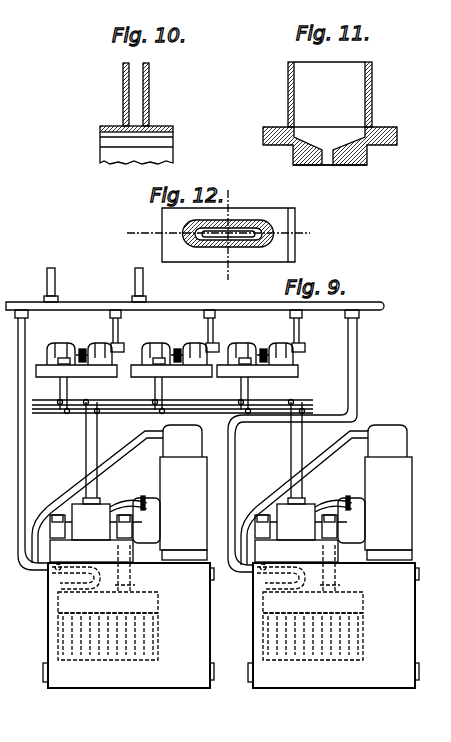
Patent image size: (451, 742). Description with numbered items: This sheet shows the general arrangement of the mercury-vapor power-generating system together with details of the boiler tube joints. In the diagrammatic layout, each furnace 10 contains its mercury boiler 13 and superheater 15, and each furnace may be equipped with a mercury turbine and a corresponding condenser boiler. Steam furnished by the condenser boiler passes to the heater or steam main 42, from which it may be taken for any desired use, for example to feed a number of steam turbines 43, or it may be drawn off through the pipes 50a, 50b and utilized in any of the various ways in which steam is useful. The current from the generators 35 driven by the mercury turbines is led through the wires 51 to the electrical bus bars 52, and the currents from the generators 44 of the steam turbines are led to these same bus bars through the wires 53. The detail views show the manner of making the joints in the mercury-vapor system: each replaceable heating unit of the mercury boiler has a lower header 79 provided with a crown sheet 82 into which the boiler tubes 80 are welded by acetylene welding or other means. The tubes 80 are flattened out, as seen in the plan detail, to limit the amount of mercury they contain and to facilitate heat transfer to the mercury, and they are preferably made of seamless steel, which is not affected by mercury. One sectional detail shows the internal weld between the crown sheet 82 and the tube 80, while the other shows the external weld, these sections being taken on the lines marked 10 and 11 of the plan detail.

In FIG. 10, the boiler tubes 80 is at (150, 90).
In FIG. 11, the boiler tubes 80 is at (373, 90).
In FIG. 12, the boiler tubes 80 is at (236, 221).
In FIG. 10, the crown sheet 82 is at (160, 126).
In FIG. 11, the crown sheet 82 is at (385, 127).
In FIG. 12, the crown sheet 82 is at (296, 222).
In FIG. 10, the lower header 79 is at (173, 146).
In FIG. 11, the lower header 79 is at (368, 152).
In FIG. 12, the furnace 10 is at (229, 235).
In FIG. 9, the furnace 10 is at (218, 503).
In FIG. 12, the section line 11 is at (224, 233).
In FIG. 9, the steam main 42 is at (372, 311).
In FIG. 9, the pipe 50a is at (56, 283).
In FIG. 9, the pipe 50b is at (144, 282).
In FIG. 9, the generators 44 is at (64, 347).
In FIG. 9, the steam turbines 43 is at (106, 347).
In FIG. 9, the wires 53 is at (72, 393).
In FIG. 9, the electrical bus bars 52 is at (133, 414).
In FIG. 9, the wires 51 is at (85, 462).
In FIG. 9, the generators 35 is at (231, 493).
In FIG. 9, the superheater 15 is at (55, 587).
In FIG. 9, the mercury boiler 13 is at (150, 635).